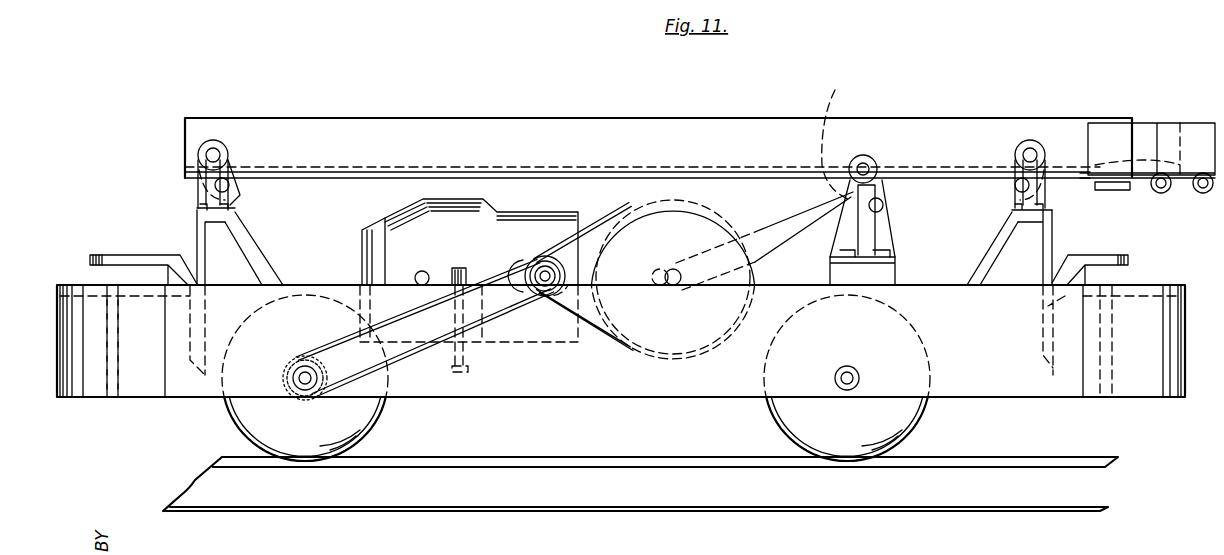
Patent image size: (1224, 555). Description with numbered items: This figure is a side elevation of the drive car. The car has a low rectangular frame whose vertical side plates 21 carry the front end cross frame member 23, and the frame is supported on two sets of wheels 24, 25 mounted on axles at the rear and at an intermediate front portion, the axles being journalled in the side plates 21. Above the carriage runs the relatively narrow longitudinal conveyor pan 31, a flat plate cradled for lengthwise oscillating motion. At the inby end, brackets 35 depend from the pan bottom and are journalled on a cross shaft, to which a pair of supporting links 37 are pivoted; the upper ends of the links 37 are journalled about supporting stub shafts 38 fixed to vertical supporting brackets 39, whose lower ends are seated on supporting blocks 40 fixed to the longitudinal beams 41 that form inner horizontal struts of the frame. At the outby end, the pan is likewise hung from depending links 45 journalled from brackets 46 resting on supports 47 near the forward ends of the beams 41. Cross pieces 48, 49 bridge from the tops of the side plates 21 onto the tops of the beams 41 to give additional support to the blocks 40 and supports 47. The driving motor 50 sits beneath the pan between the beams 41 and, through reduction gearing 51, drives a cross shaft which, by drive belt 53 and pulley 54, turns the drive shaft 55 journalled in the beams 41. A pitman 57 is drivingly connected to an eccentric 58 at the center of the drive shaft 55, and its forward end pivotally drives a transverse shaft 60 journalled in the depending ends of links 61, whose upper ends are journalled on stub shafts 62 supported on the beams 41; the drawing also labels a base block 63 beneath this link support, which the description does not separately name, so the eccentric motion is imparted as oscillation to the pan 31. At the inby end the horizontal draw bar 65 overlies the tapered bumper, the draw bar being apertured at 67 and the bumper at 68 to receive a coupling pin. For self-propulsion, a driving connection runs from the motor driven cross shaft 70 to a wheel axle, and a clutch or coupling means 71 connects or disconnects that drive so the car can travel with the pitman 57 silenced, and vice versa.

The vertical side plates 21 is at (1012, 400).
The front end cross frame member 23 is at (1100, 292).
The wheels 24 is at (245, 420).
The wheels 25 is at (795, 420).
The conveyor pan 31 is at (708, 170).
The brackets 35 is at (236, 197).
The supporting links 37 is at (240, 192).
The supporting stub shafts 38 is at (211, 140).
The vertical supporting brackets 39 is at (197, 206).
The supporting blocks 40 is at (199, 228).
The longitudinal beams 41 is at (940, 285).
The links 45 is at (1058, 186).
The brackets 46 is at (1046, 212).
The supports 47 is at (1046, 242).
The cross pieces 48 is at (254, 240).
The cross pieces 49 is at (1000, 245).
The driving motor 50 is at (437, 215).
The reduction gearing 51 is at (535, 330).
The drive belt 53 is at (582, 240).
The pulley 54 is at (660, 215).
The drive shaft 55 is at (678, 270).
The pitman 57 is at (772, 226).
The eccentric 58 is at (664, 286).
The transverse shaft 60 is at (893, 207).
The links 61 is at (836, 132).
The stub shafts 62 is at (864, 155).
The support base block 63 is at (895, 249).
The draw bar 65 is at (145, 257).
The draw bar aperture 67 is at (108, 257).
The bumper aperture 68 is at (110, 285).
The motor driven cross shaft 70 is at (545, 256).
The clutch or coupling means 71 is at (565, 355).